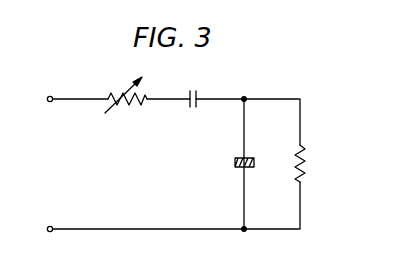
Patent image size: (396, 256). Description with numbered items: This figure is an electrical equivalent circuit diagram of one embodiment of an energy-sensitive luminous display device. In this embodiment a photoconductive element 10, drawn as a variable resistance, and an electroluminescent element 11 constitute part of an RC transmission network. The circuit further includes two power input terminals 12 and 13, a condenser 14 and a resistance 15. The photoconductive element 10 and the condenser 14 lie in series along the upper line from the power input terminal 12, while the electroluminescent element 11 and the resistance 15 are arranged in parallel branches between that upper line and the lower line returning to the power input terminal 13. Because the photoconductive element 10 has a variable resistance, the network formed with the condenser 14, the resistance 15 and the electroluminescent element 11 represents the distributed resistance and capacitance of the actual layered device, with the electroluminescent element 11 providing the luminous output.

The photoconductive element 10 is at (117, 93).
The electroluminescent element 11 is at (234, 162).
The power input terminal 12 is at (39, 100).
The power input terminal 13 is at (39, 230).
The condenser 14 is at (199, 92).
The resistance 15 is at (297, 158).